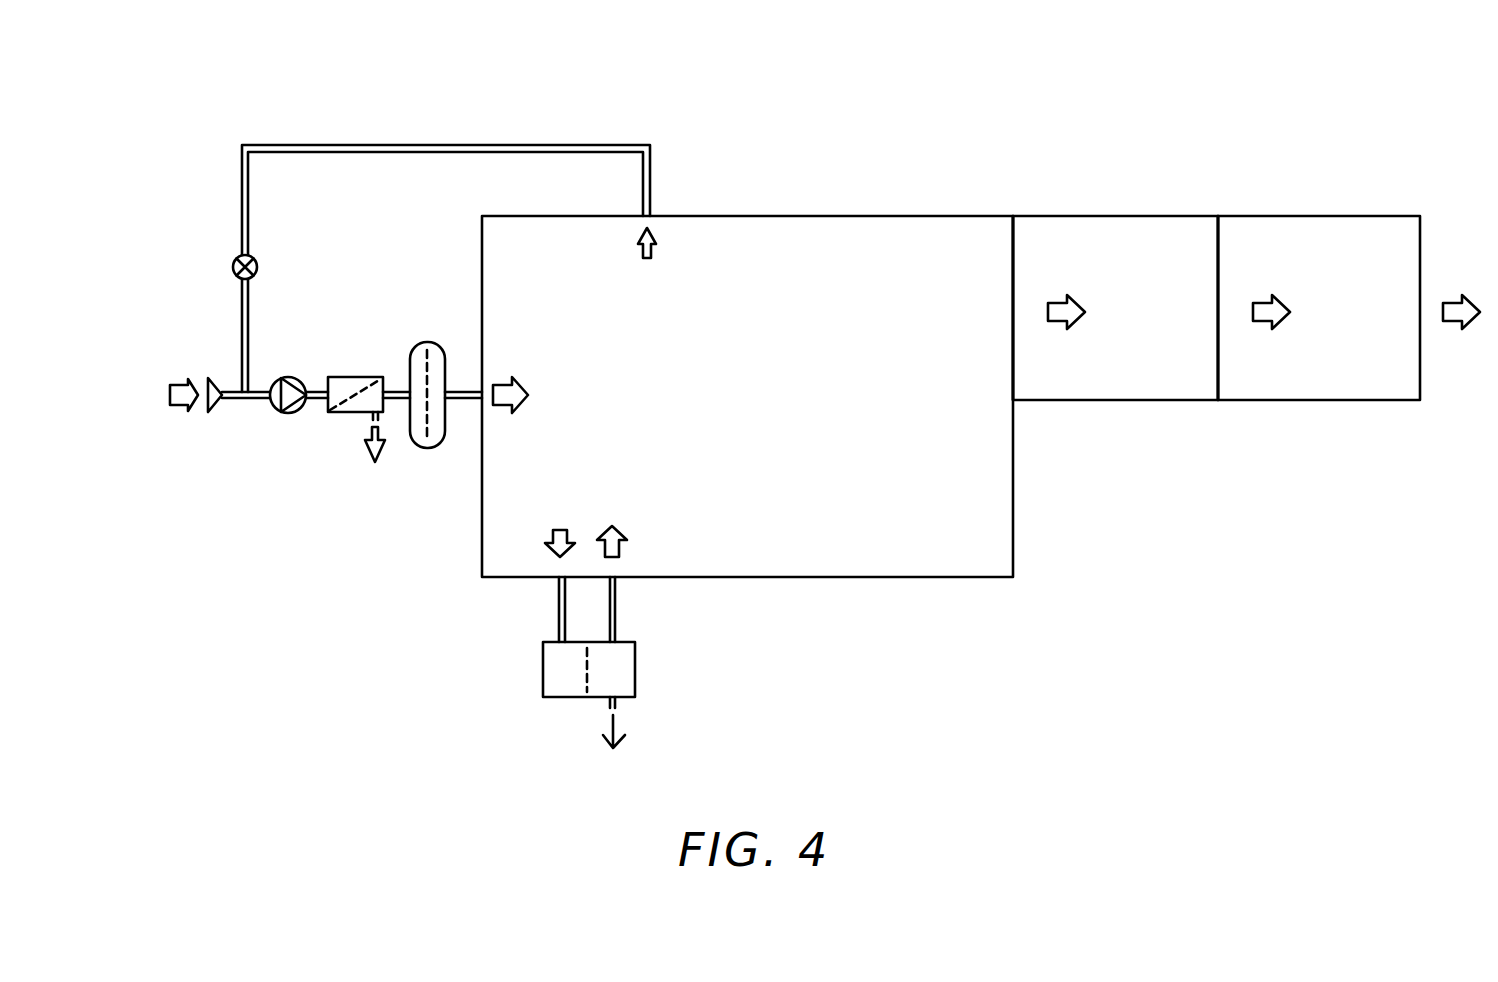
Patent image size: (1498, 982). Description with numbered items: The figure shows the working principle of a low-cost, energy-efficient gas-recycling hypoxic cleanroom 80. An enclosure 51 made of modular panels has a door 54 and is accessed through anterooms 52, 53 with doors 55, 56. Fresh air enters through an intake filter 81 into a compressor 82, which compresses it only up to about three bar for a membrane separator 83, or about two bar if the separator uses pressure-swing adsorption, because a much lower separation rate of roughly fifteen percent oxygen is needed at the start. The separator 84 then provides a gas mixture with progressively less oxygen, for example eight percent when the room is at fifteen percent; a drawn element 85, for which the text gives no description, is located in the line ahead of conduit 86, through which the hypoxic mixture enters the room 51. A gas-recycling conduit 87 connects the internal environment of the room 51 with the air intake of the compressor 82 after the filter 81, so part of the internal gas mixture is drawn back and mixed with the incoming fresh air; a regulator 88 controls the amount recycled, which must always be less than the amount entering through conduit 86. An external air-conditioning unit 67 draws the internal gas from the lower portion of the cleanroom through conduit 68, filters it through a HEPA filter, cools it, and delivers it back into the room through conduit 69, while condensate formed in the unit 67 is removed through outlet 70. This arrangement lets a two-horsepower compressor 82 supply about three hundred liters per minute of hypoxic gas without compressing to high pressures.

The hypoxic cleanroom 80 is at (230, 103).
The intake filter 81 is at (213, 380).
The compressor 82 is at (270, 405).
The separator 83 is at (345, 383).
The separator 84 is at (368, 425).
The reservoir tank 85 is at (420, 455).
The conduit 86 is at (463, 403).
The gas-recycling conduit 87 is at (462, 144).
The regulator 88 is at (257, 262).
The enclosure 51 is at (710, 232).
The anteroom 52 is at (1125, 232).
The anteroom 53 is at (1330, 232).
The door 54 is at (1018, 232).
The door 55 is at (1222, 232).
The door 56 is at (1420, 264).
The air-conditioning unit 67 is at (553, 683).
The conduit 68 is at (557, 598).
The conduit 69 is at (617, 598).
The outlet 70 is at (617, 707).